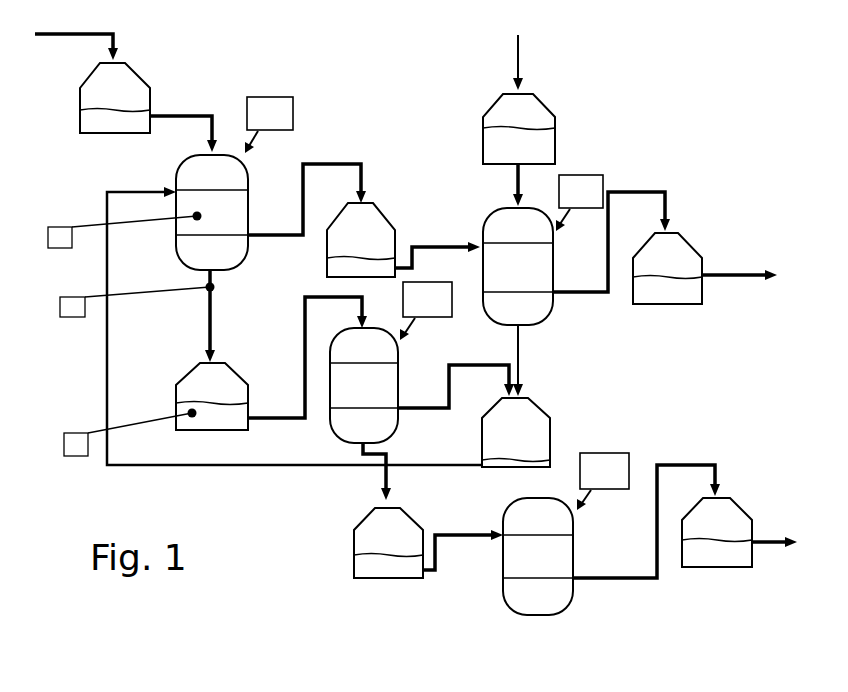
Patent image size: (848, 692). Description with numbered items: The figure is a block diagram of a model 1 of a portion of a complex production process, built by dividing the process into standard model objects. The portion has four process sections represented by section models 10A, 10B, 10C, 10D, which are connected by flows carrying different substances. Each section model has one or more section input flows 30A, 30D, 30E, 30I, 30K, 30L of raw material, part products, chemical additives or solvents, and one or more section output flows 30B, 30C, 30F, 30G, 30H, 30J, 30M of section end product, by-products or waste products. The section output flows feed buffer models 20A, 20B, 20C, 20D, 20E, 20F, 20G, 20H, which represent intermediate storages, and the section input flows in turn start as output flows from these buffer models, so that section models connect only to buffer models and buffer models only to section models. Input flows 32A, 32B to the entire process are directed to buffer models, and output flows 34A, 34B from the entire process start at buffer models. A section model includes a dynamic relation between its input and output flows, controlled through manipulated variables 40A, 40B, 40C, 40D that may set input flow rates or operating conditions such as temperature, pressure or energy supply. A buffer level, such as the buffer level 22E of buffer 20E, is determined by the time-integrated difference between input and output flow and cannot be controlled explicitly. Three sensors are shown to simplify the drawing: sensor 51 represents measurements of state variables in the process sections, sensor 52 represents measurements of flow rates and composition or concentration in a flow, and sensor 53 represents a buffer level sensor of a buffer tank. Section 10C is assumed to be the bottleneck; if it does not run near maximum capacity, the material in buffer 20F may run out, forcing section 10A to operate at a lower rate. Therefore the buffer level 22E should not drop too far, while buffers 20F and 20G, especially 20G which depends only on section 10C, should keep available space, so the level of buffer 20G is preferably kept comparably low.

The model 1 is at (661, 150).
The section model 10A is at (192, 262).
The section model 10B is at (548, 320).
The section model 10C is at (382, 434).
The section model 10D is at (550, 615).
The buffer model 20A is at (85, 135).
The buffer model 20B is at (385, 214).
The buffer model 20C is at (546, 104).
The buffer model 20D is at (672, 304).
The buffer model 20E is at (225, 435).
The buffer model 20F is at (548, 432).
The buffer model 20G is at (378, 578).
The buffer model 20H is at (722, 567).
The buffer level 22E is at (176, 400).
The section input flow 30A is at (190, 115).
The section output flow 30B is at (262, 243).
The section output flow 30C is at (215, 312).
The section input flow 30D is at (420, 242).
The section input flow 30E is at (515, 200).
The section output flow 30F is at (600, 305).
The section output flow 30G is at (522, 380).
The section output flow 30H is at (475, 365).
The section input flow 30I is at (296, 420).
The section output flow 30J is at (388, 480).
The section input flow 30K is at (245, 467).
The section input flow 30L is at (452, 538).
The section output flow 30M is at (640, 580).
The input flow 32A is at (38, 40).
The input flow 32B is at (522, 58).
The output flow 34A is at (752, 282).
The output flow 34B is at (775, 545).
The manipulated variable 40A is at (269, 125).
The manipulated variable 40B is at (579, 203).
The manipulated variable 40C is at (426, 311).
The manipulated variable 40D is at (603, 481).
The sensor 51 is at (52, 250).
The sensor 52 is at (75, 318).
The sensor 53 is at (78, 457).